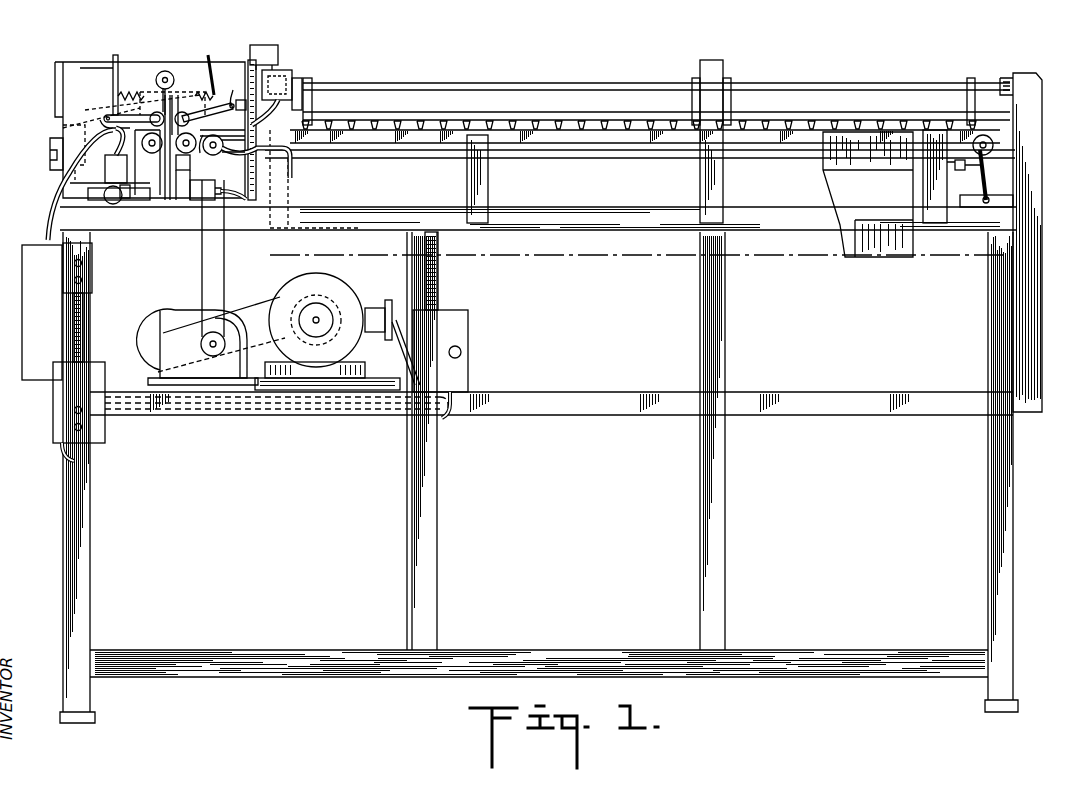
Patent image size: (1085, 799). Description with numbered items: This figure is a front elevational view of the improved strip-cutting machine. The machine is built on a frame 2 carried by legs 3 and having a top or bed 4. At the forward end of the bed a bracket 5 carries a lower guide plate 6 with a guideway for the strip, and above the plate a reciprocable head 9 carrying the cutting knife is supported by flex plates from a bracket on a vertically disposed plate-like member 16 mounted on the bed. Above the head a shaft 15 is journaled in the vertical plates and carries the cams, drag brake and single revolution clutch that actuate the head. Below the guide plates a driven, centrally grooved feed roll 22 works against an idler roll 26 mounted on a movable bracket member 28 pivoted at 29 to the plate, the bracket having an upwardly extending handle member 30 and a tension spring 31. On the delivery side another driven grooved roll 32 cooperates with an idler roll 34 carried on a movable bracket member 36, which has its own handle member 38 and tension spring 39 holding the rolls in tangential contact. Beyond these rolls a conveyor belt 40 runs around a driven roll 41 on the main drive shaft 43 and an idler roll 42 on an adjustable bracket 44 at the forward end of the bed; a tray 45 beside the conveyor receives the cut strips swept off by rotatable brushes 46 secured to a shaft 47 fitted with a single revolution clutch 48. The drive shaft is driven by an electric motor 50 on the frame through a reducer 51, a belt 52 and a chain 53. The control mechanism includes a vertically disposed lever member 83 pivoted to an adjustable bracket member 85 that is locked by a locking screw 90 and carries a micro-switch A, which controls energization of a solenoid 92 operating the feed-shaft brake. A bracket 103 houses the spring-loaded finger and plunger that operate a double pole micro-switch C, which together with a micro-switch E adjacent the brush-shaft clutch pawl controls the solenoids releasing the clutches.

The frame 2 is at (1025, 458).
The legs 3 is at (78, 565).
The bed 4 is at (1003, 218).
The bracket 5 is at (174, 185).
The lower guide plate 6 is at (144, 190).
The head 9 is at (180, 102).
The shaft 15 is at (165, 72).
The plate-like member 16 is at (78, 78).
The feed roll 22 is at (152, 153).
The idler roll 26 is at (152, 122).
The movable bracket member 28 is at (106, 122).
The pivot 29 is at (108, 116).
The handle member 30 is at (111, 72).
The tension spring 31 is at (129, 83).
The driven roll 32 is at (222, 122).
The idler roll 34 is at (190, 90).
The movable bracket member 36 is at (230, 105).
The handle member 38 is at (218, 102).
The tension spring 39 is at (182, 110).
The conveyor belt 40 is at (454, 155).
The driven roll 41 is at (215, 156).
The idler roll 42 is at (995, 145).
The drive shaft 43 is at (280, 150).
The adjustable bracket 44 is at (995, 175).
The tray 45 is at (880, 246).
The rotatable brushes 46 is at (560, 110).
The shaft 47 is at (834, 86).
The single revolution clutch 48 is at (282, 90).
The electric motor 50 is at (324, 295).
The reducer 51 is at (170, 345).
The belt 52 is at (250, 305).
The chain 53 is at (200, 285).
The lever member 83 is at (137, 186).
The adjustable bracket member 85 is at (92, 264).
The locking screw 90 is at (113, 204).
The solenoid 92 is at (50, 154).
The bracket 103 is at (177, 190).
The micro-switch A is at (62, 180).
The double pole micro-switch C is at (216, 200).
The micro-switch E is at (265, 50).